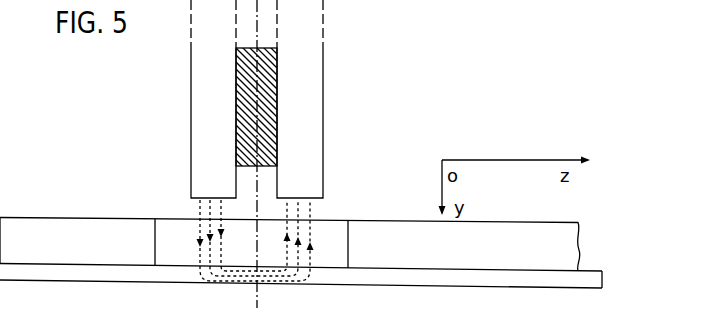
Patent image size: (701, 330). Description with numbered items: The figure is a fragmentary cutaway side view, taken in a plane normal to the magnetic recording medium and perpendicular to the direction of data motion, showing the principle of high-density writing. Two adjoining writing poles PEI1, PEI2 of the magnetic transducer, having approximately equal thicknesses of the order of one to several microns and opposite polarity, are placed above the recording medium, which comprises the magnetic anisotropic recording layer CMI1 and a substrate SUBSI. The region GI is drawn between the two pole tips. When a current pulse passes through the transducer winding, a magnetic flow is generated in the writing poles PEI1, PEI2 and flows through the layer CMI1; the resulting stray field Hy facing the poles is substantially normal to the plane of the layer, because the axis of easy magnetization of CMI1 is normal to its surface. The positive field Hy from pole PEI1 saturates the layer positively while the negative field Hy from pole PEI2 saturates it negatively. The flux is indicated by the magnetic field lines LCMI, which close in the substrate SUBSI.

The first writing pole PEI1 is at (191, 107).
The second writing pole PEI2 is at (310, 109).
The gap insulator between electrodes GI is at (255, 203).
The magnetic field lines LCMI is at (305, 213).
The magnetic field Hy is at (251, 243).
The magnetic anisotropic recording layer CMI1 is at (301, 245).
The substrate SUBSI is at (440, 277).